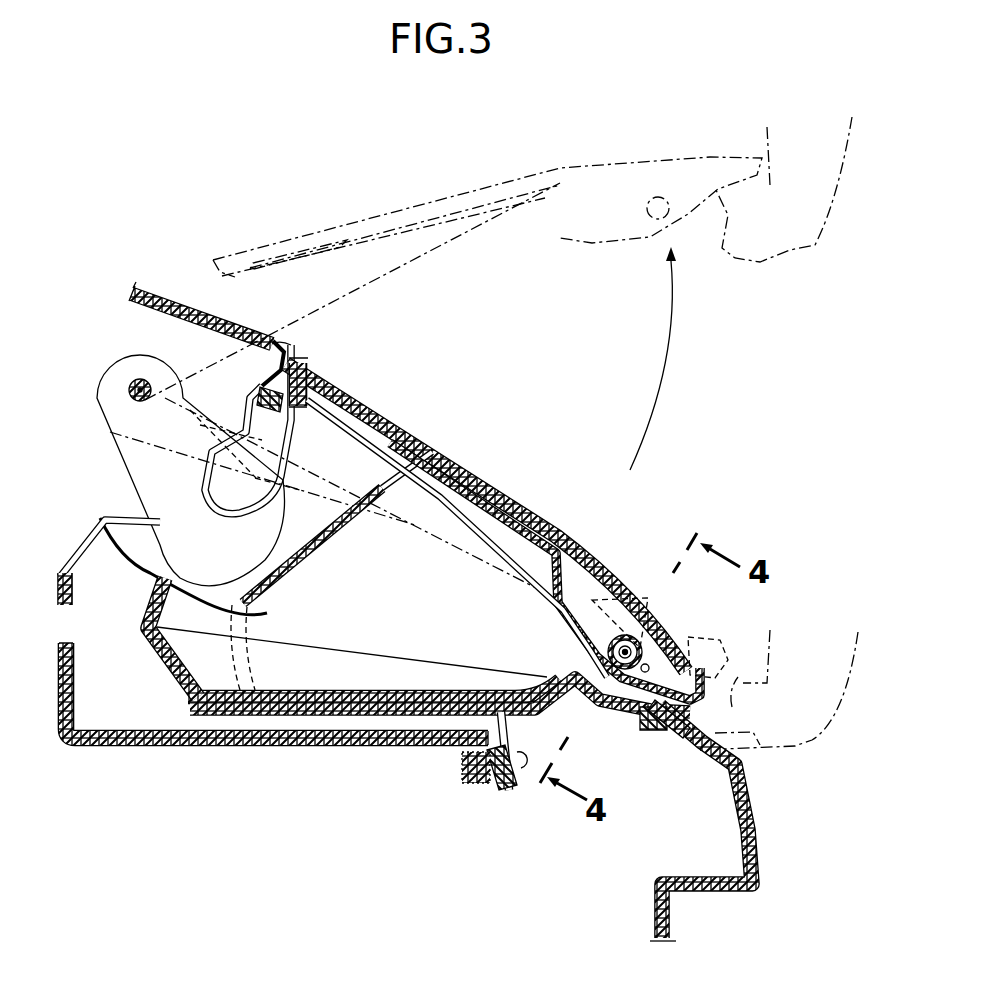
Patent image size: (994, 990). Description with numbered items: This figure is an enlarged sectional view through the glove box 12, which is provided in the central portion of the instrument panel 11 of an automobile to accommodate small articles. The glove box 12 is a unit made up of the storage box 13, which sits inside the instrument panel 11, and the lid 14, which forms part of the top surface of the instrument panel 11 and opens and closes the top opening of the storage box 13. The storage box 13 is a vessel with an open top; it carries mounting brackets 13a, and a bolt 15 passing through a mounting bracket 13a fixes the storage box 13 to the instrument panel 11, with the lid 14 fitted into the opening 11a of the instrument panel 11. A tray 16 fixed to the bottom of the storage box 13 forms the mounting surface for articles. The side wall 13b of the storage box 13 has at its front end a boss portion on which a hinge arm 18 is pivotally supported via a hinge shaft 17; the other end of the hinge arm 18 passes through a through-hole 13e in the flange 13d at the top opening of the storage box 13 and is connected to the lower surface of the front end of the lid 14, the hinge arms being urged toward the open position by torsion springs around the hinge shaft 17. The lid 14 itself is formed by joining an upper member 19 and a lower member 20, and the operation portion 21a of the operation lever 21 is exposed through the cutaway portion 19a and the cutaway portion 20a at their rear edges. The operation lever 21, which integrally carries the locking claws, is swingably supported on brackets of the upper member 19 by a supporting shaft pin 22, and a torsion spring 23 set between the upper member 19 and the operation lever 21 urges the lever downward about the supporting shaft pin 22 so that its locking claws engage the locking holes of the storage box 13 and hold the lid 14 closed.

The instrument panel 11 is at (184, 298).
The opening 11a is at (288, 340).
The glove box 12 is at (548, 425).
The storage box 13 is at (145, 665).
The mounting bracket 13a is at (512, 790).
The side wall 13b is at (430, 603).
The flange 13d is at (297, 390).
The through-hole 13e is at (360, 473).
The lid 14 is at (463, 462).
The bolt 15 is at (518, 760).
The tray 16 is at (380, 690).
The hinge shaft 17 is at (138, 388).
The hinge arm 18 is at (287, 543).
The upper member 19 is at (530, 510).
The cutaway portion 19a is at (700, 650).
The lower member 20 is at (490, 523).
The cutaway portion 20a is at (587, 653).
The operation lever 21 is at (717, 682).
The operation portion 21a is at (683, 730).
The supporting shaft pin 22 is at (624, 670).
The torsion spring 23 is at (619, 640).